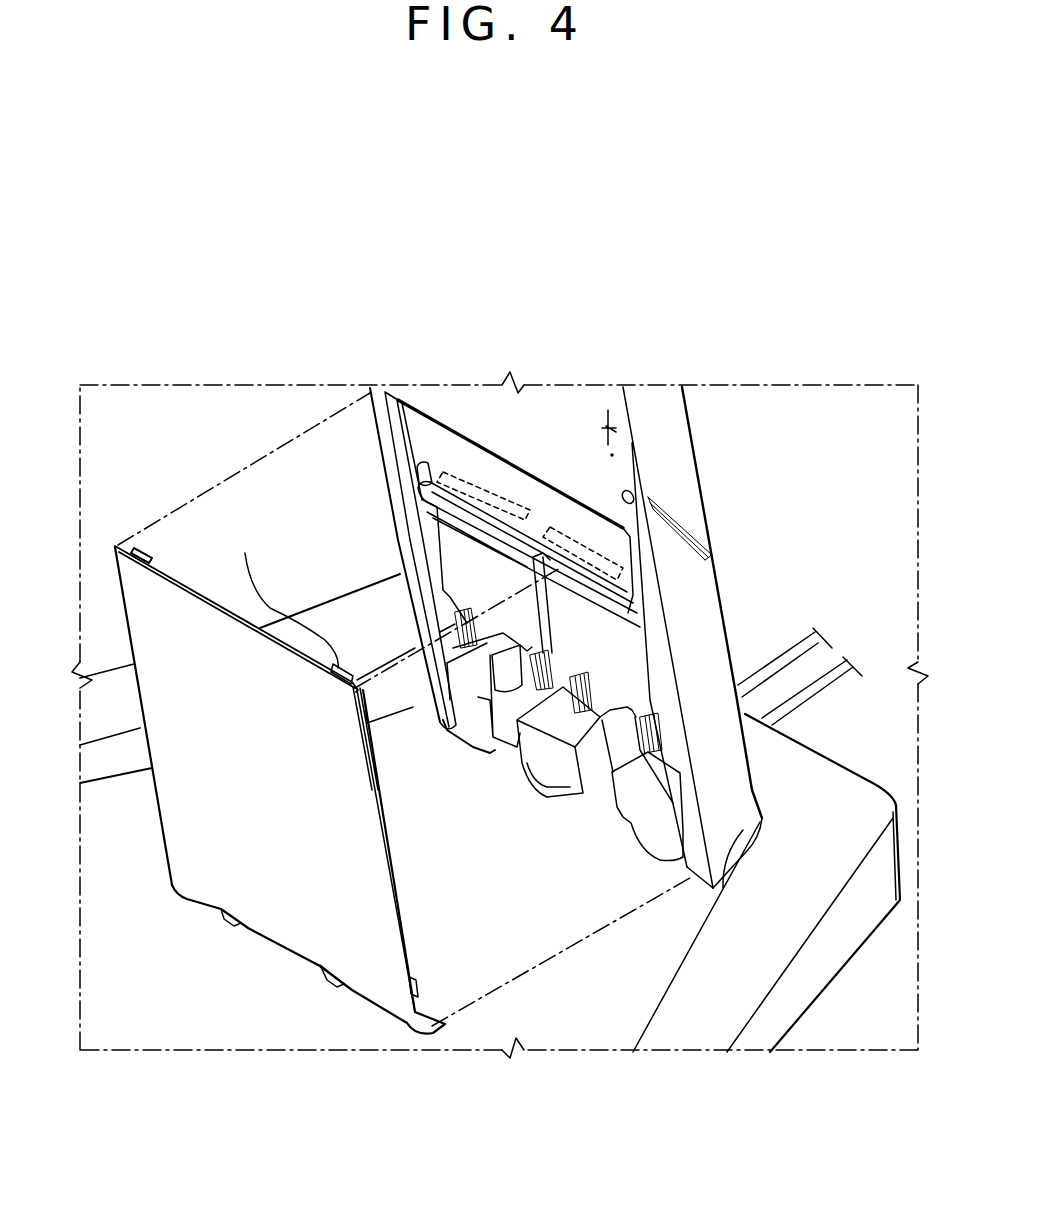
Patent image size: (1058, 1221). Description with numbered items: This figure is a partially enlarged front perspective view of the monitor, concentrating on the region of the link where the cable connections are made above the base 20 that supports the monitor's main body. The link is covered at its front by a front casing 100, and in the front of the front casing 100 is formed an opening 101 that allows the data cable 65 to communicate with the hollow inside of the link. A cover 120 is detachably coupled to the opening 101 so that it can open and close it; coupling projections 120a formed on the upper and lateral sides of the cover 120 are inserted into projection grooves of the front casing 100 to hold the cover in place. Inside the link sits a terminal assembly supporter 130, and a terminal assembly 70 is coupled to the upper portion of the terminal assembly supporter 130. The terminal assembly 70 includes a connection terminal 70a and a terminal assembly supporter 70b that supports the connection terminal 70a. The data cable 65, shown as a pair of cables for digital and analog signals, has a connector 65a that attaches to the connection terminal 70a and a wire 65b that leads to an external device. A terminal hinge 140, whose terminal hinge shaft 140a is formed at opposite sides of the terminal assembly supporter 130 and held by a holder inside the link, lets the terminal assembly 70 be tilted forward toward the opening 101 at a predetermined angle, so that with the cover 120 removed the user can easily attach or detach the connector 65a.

The base 20 is at (867, 797).
The data cable 65 is at (545, 735).
The connector 65a is at (503, 633).
The wire 65b is at (507, 757).
The terminal assembly 70 is at (637, 333).
The connection terminal 70a is at (488, 483).
The terminal assembly supporter 70b is at (553, 520).
The front casing 100 is at (385, 393).
The opening 101 is at (412, 552).
The cover 120 is at (185, 815).
The coupling projections 120a is at (150, 557).
The terminal assembly supporter 130 is at (633, 587).
The terminal hinge 140 is at (413, 450).
The terminal hinge shaft 140a is at (432, 465).